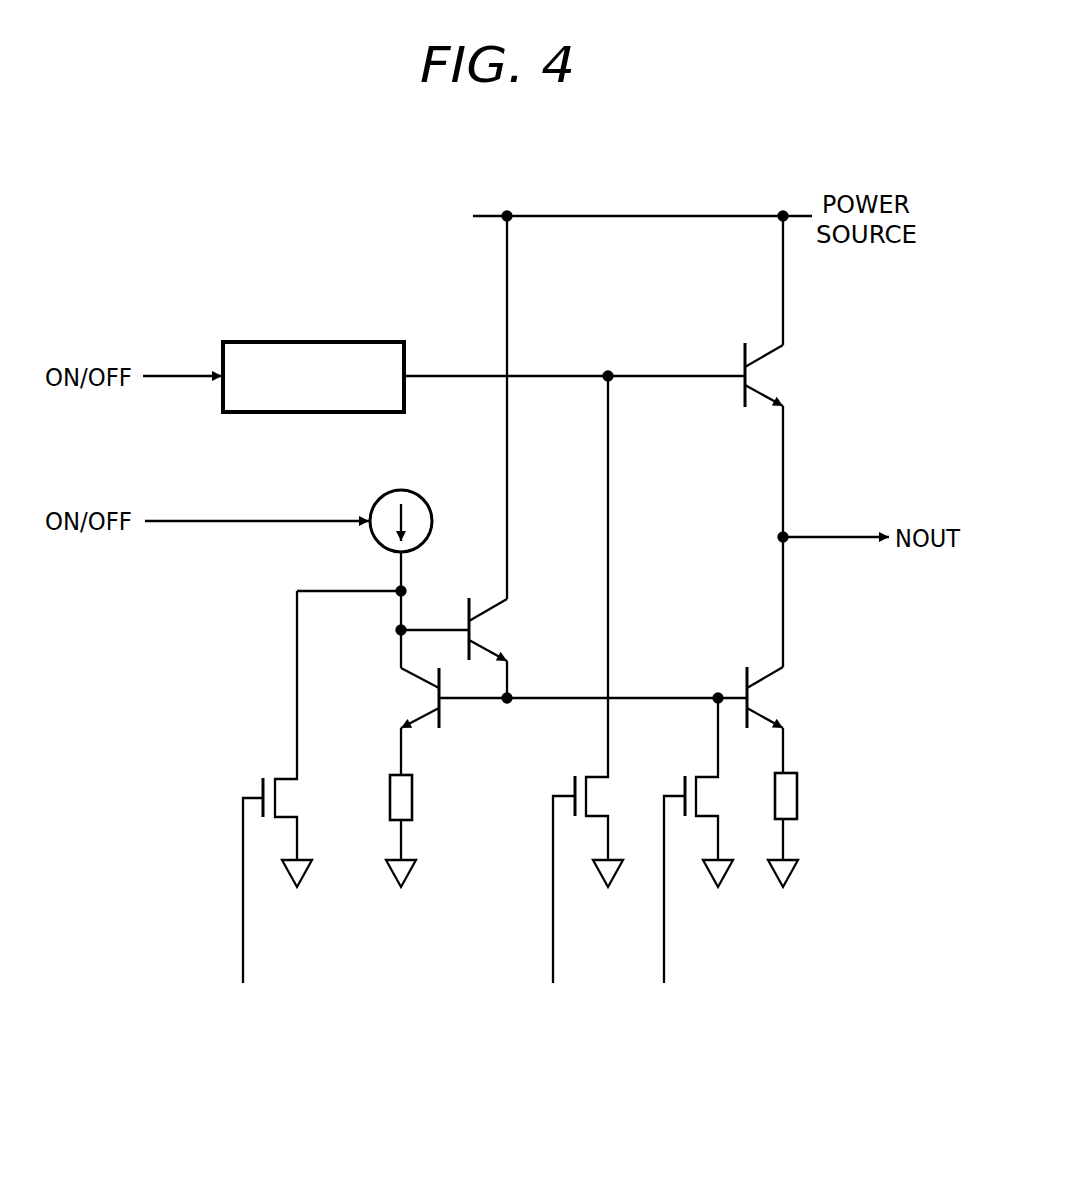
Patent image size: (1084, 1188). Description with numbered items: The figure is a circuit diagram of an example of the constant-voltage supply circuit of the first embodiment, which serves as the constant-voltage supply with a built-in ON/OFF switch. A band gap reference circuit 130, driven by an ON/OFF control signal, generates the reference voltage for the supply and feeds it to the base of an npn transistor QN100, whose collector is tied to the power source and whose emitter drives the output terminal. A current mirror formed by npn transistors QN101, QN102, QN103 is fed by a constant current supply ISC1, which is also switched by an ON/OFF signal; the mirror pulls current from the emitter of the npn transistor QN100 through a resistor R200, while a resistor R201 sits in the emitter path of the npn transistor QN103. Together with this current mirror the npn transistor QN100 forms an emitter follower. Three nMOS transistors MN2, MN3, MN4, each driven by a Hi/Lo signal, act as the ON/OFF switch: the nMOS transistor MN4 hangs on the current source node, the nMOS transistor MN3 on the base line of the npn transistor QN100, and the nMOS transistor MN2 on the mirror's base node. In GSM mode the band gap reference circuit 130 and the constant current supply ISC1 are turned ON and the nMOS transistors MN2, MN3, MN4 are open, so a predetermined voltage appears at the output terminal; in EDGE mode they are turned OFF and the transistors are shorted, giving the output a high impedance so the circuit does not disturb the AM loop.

The band gap reference circuit 130 is at (379, 342).
The npn transistor QN100 is at (801, 441).
The npn transistor QN101 is at (800, 697).
The npn transistor QN102 is at (489, 648).
The npn transistor QN103 is at (387, 698).
The constant current supply ISC1 is at (424, 507).
The resistor R200 is at (815, 807).
The resistor R201 is at (429, 807).
The nMOS transistor MN2 is at (685, 859).
The nMOS transistor MN3 is at (575, 698).
The nMOS transistor MN4 is at (264, 807).